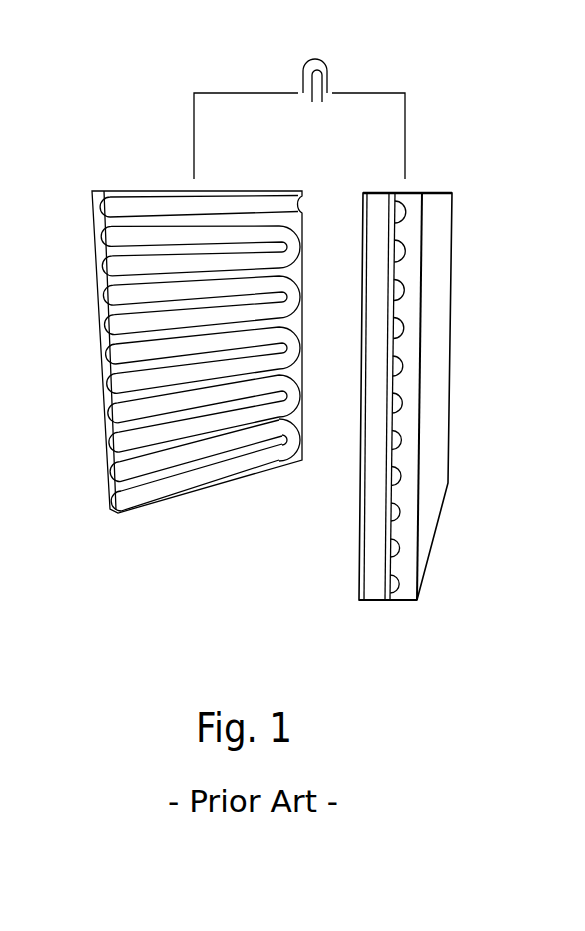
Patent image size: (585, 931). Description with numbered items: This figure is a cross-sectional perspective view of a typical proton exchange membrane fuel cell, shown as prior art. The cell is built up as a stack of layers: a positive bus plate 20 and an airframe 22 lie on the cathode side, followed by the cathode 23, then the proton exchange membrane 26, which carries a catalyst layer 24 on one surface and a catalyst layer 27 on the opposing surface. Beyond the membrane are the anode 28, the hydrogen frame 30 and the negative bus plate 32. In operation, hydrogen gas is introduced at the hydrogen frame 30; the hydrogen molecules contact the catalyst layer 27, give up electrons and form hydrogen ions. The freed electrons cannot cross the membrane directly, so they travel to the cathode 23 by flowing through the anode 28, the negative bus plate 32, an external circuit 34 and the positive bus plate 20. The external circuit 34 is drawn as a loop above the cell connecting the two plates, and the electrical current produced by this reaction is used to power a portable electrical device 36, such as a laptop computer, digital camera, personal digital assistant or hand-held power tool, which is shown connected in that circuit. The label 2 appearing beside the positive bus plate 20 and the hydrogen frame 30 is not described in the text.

The positive bus plate 20 is at (108, 407).
The airframe 22 is at (112, 295).
The cathode 23 is at (365, 558).
The catalyst layer 24 is at (363, 598).
The proton exchange membrane 26 is at (376, 428).
The catalyst layer 27 is at (388, 600).
The anode 28 is at (400, 563).
The hydrogen frame 30 is at (387, 419).
The negative bus plate 32 is at (440, 397).
The external circuit 34 is at (230, 93).
The portable electrical device 36 is at (312, 58).
The section line indicator 2 is at (283, 343).